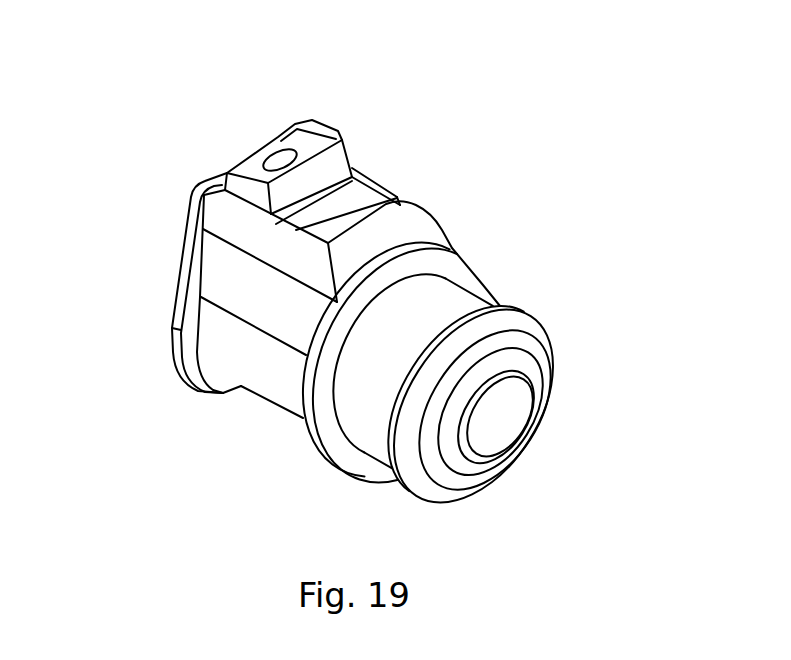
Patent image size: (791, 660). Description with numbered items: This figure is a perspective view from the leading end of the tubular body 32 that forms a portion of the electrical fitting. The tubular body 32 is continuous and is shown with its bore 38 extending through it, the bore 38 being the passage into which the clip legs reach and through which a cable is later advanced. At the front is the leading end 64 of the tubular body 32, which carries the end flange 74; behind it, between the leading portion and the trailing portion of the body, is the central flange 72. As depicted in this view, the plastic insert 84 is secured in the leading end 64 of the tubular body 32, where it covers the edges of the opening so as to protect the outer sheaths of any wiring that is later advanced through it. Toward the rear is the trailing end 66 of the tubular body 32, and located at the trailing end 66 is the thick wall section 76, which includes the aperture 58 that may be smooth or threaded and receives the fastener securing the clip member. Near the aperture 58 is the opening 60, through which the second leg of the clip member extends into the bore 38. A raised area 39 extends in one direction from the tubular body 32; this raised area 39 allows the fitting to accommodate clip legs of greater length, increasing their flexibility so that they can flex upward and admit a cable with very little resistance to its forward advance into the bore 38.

The tubular body 32 is at (140, 166).
The aperture 58 is at (279, 162).
The thick wall section 76 is at (328, 167).
The opening 60 is at (343, 186).
The raised area 39 is at (377, 205).
The trailing end 66 is at (182, 260).
The central flange 72 is at (463, 262).
The end flange 74 is at (516, 305).
The tubular insert 84 is at (545, 375).
The bore 38 is at (500, 414).
The leading end 64 is at (413, 460).